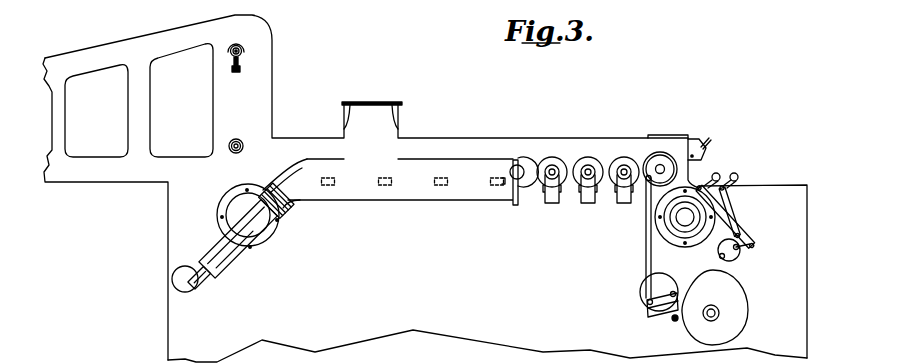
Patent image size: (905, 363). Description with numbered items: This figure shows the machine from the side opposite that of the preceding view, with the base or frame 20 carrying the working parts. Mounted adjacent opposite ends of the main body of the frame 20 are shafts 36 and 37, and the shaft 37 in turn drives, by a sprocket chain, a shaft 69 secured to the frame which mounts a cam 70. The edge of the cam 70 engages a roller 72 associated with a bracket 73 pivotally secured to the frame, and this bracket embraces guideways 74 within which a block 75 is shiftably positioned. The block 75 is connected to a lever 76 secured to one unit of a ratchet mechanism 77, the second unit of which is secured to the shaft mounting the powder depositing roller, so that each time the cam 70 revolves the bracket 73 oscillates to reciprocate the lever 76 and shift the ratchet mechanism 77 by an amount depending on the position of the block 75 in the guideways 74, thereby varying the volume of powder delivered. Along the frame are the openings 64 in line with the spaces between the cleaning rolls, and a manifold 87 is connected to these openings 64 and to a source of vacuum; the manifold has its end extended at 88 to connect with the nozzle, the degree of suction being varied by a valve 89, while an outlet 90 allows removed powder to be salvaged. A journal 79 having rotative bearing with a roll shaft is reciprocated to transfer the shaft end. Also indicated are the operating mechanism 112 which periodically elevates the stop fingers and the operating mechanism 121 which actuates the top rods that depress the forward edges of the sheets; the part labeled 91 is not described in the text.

The base or frame 20 is at (357, 322).
The shaft 36 is at (240, 210).
The shaft 37 is at (683, 217).
The openings 64 is at (327, 186).
The shaft 69 is at (720, 312).
The cam 70 is at (740, 285).
The roller 72 is at (675, 320).
The bracket 73 is at (674, 292).
The guideways 74 is at (658, 317).
The block 75 is at (647, 307).
The lever 76 is at (651, 233).
The ratchet mechanism 77 is at (657, 157).
The journal 79 is at (551, 205).
The manifold 87 is at (302, 163).
The manifold end 88 is at (218, 258).
The valve 89 is at (200, 262).
The outlet 90 is at (185, 282).
The cap 91 is at (377, 103).
The operating mechanism 112 is at (720, 220).
The operating mechanism 121 is at (745, 230).